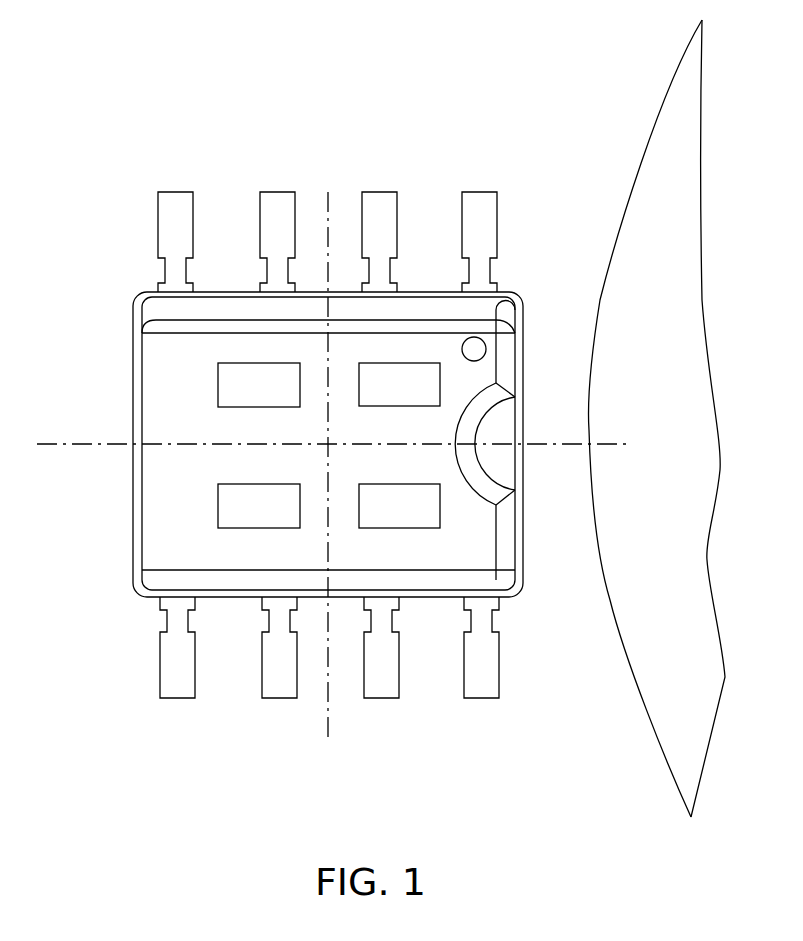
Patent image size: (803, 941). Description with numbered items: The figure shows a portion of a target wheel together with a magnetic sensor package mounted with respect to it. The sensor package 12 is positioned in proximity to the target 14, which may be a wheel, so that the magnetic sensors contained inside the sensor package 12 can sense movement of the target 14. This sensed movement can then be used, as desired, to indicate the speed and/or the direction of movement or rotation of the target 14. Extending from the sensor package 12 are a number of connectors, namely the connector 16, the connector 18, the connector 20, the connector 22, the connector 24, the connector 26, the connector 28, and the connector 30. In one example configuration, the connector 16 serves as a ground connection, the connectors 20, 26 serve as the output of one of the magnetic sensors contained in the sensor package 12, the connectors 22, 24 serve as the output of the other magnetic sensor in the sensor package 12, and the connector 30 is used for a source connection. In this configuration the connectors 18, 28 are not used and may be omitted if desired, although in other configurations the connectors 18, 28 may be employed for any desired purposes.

The sensor package 12 is at (188, 492).
The target 14 is at (661, 406).
The connector 16 is at (172, 200).
The connector 18 is at (277, 200).
The connector 20 is at (380, 200).
The connector 22 is at (480, 200).
The connector 24 is at (174, 690).
The connector 26 is at (278, 688).
The connector 28 is at (383, 688).
The connector 30 is at (483, 688).